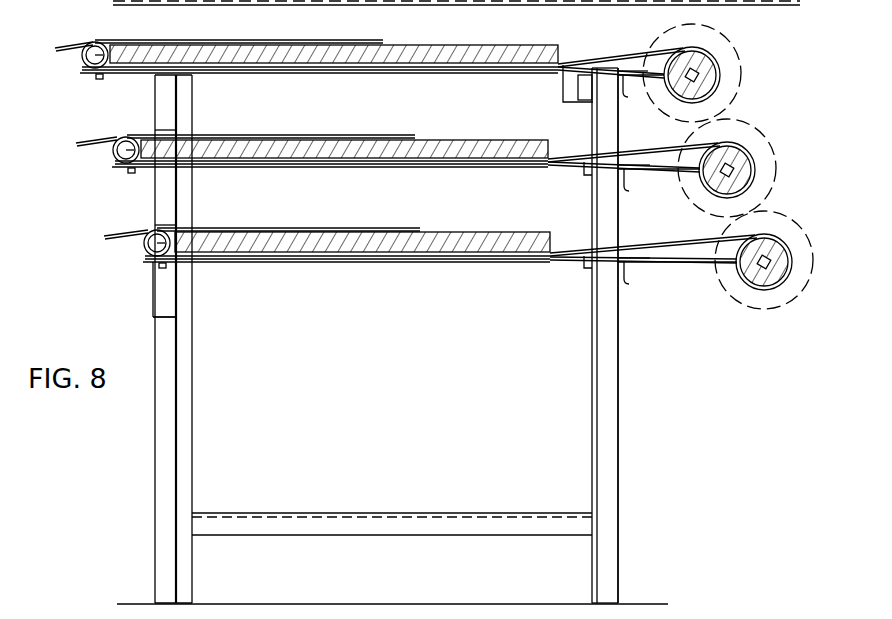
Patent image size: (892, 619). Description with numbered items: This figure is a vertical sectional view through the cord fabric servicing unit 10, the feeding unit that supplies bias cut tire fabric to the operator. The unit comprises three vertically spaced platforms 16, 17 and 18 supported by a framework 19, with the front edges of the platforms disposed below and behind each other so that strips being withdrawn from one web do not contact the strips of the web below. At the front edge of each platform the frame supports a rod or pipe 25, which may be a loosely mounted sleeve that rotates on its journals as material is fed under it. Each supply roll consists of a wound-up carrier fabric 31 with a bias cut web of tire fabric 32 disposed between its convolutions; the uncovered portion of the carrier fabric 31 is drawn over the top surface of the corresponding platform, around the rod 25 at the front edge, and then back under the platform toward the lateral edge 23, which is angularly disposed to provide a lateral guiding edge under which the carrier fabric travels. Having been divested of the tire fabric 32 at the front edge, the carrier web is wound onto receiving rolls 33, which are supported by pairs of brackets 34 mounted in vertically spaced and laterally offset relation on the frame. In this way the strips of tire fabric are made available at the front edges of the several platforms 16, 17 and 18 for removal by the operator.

The cord fabric servicing unit 10 is at (392, 471).
The uppermost platform 16 is at (451, 52).
The platform 17 is at (444, 148).
The platform 18 is at (444, 243).
The framework 19 is at (174, 392).
The lateral edge 23 is at (559, 61).
The rod or pipe 25 is at (89, 63).
The carrier fabric 31 is at (303, 75).
The bias cut web of tire fabric 32 is at (70, 40).
The receiving roll 33 is at (705, 66).
The bracket 34 is at (619, 92).